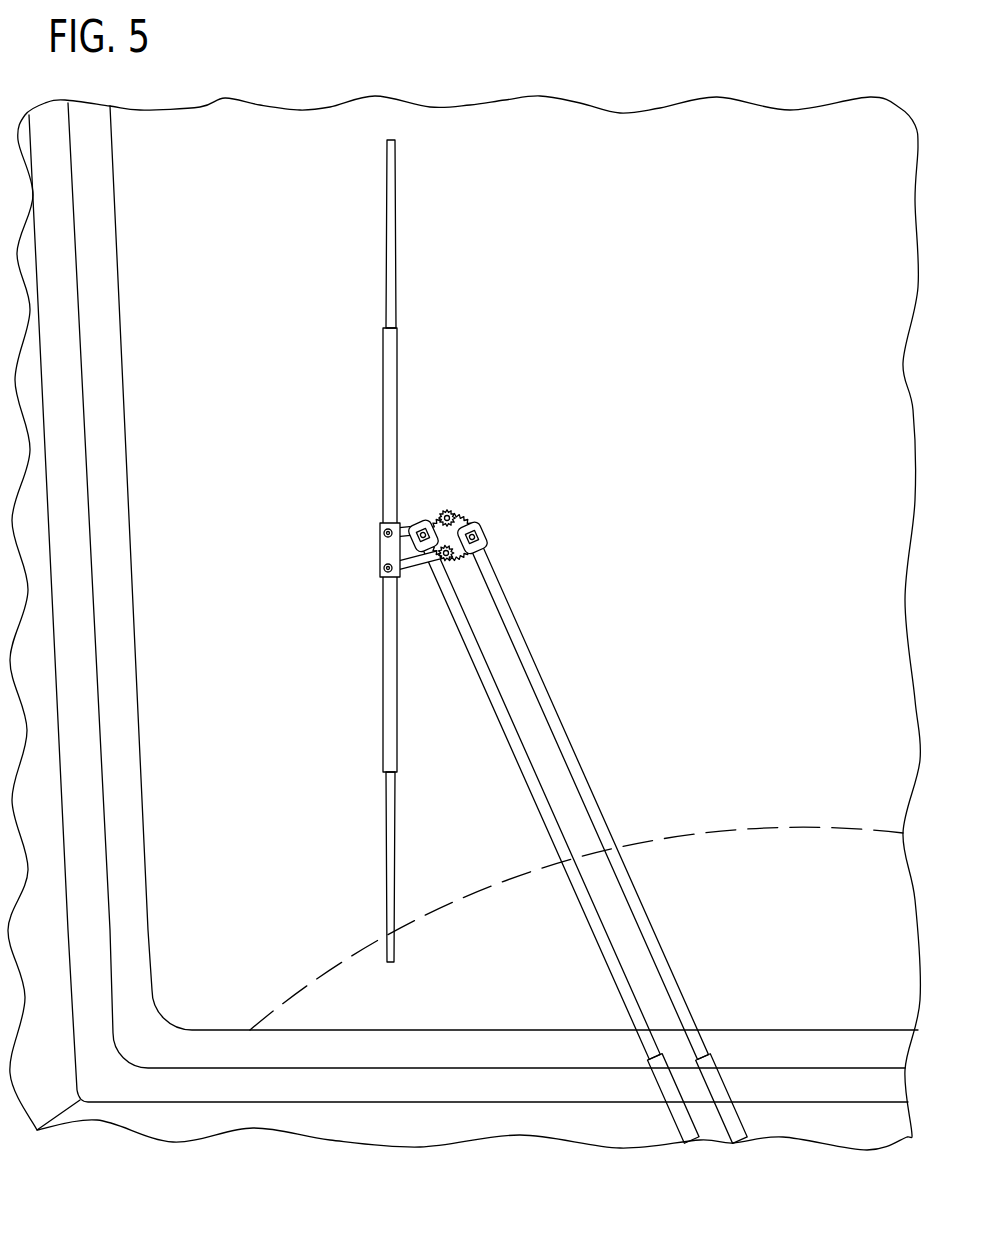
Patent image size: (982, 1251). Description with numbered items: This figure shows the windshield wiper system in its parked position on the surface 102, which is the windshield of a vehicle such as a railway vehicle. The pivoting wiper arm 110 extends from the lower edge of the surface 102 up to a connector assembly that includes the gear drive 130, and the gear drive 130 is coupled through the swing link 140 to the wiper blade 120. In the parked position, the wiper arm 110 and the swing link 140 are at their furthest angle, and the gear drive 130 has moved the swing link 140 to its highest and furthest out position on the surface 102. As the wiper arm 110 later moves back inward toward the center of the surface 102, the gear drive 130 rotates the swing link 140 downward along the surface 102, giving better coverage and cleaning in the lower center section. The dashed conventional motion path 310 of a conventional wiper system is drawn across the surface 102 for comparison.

The surface 102 is at (713, 360).
The wiper arm 110 is at (592, 756).
The wiper blade 120 is at (398, 407).
The gear drive 130 is at (452, 503).
The swing link 140 is at (416, 590).
The conventional motion path 310 is at (780, 832).